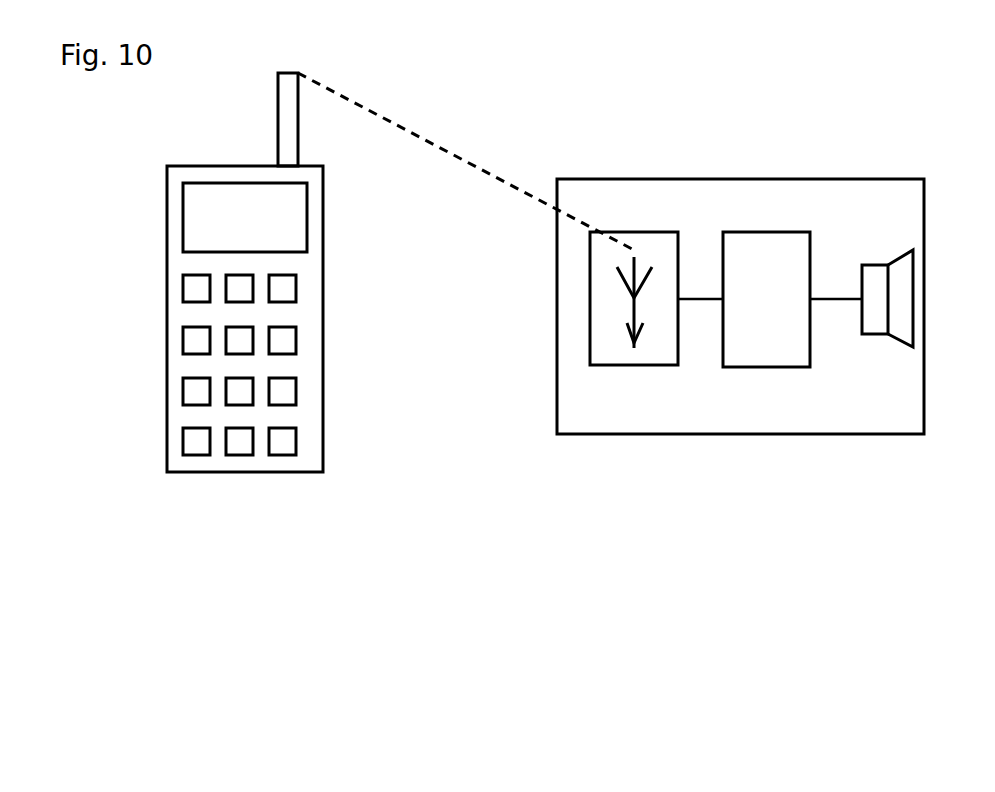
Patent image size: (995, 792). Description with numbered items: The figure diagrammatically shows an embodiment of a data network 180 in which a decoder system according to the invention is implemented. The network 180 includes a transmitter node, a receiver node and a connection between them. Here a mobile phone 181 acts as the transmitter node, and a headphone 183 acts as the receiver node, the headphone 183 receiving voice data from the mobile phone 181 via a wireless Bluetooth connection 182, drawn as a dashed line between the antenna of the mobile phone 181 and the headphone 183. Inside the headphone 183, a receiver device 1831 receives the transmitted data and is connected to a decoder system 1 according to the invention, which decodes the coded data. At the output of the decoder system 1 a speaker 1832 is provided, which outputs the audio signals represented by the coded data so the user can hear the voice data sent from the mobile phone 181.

The data network 180 is at (420, 603).
The mobile phone 181 is at (315, 357).
The wireless Bluetooth connection 182 is at (490, 169).
The headphone 183 is at (768, 216).
The receiver device 1831 is at (663, 347).
The decoder system 1 is at (776, 279).
The speaker 1832 is at (880, 323).